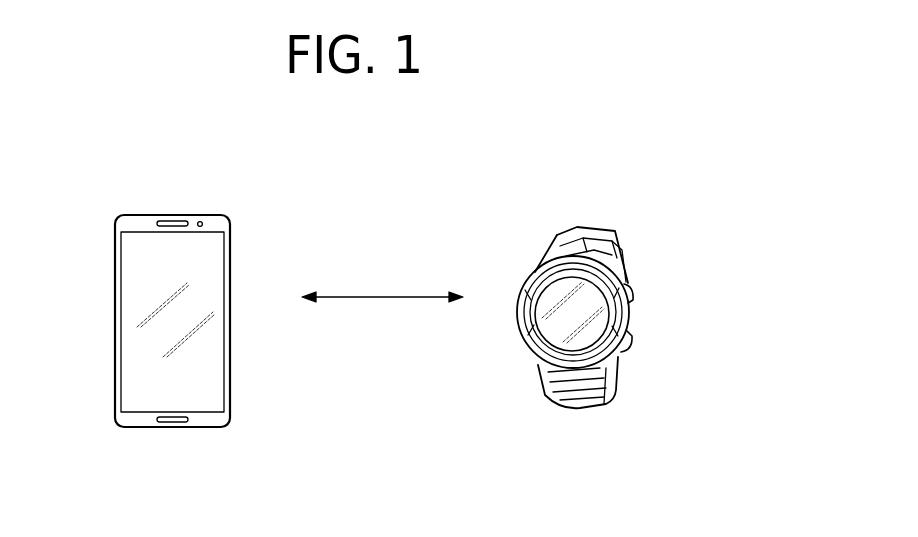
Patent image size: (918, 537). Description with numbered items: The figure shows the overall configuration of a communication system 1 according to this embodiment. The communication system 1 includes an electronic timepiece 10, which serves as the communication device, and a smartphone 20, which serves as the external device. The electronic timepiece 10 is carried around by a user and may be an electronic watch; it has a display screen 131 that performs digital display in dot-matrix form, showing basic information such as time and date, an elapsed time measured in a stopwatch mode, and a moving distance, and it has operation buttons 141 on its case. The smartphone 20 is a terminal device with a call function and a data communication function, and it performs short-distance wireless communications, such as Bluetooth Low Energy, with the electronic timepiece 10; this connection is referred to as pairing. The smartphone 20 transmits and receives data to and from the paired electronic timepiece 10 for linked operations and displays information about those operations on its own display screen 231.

The communication system 1 is at (497, 123).
The electronic timepiece 10 is at (605, 407).
The display screen 131 is at (555, 330).
The operation buttons 141 is at (632, 293).
The smartphone 20 is at (175, 427).
The display screen 231 is at (128, 352).